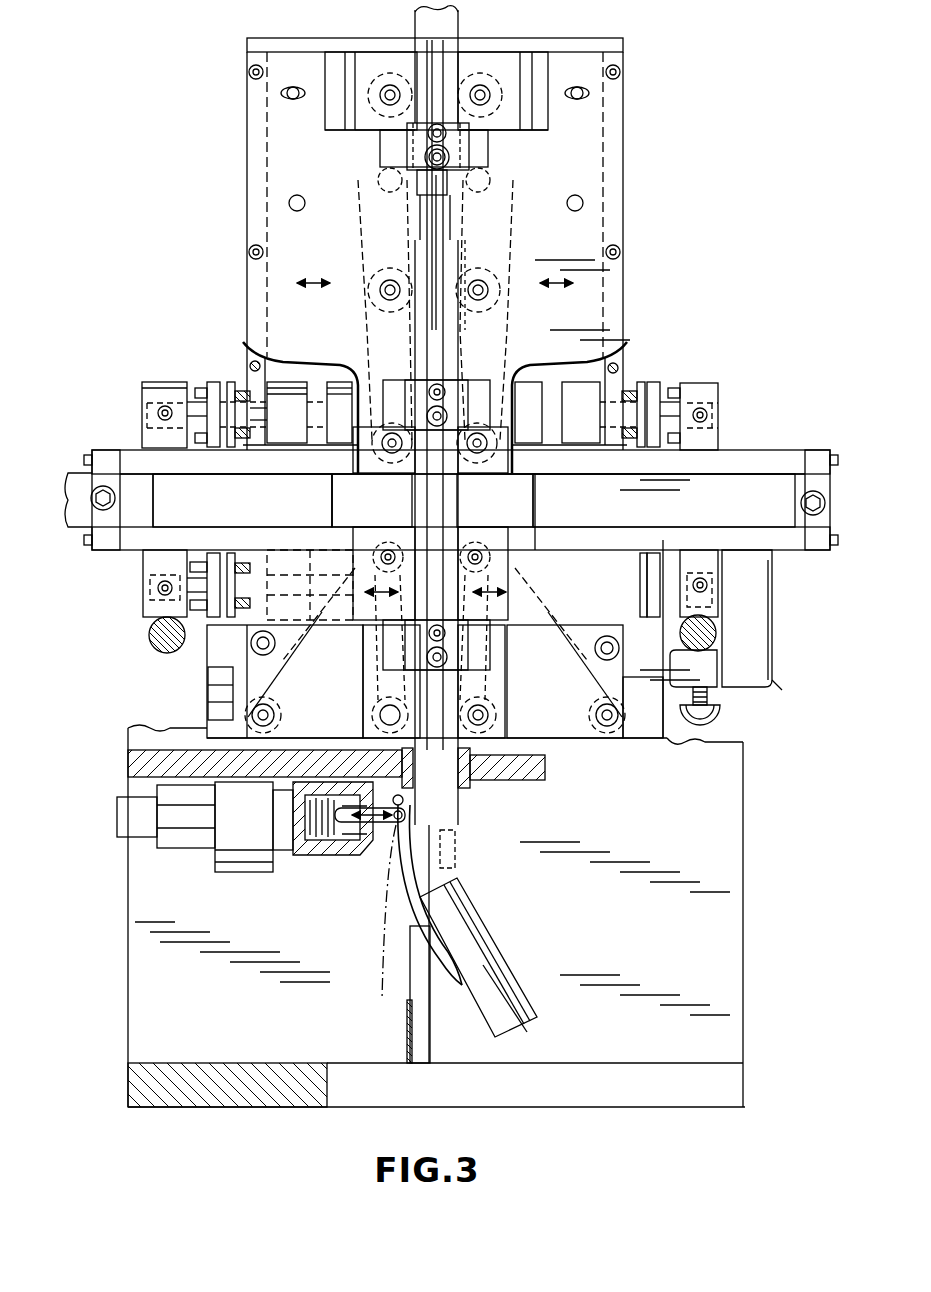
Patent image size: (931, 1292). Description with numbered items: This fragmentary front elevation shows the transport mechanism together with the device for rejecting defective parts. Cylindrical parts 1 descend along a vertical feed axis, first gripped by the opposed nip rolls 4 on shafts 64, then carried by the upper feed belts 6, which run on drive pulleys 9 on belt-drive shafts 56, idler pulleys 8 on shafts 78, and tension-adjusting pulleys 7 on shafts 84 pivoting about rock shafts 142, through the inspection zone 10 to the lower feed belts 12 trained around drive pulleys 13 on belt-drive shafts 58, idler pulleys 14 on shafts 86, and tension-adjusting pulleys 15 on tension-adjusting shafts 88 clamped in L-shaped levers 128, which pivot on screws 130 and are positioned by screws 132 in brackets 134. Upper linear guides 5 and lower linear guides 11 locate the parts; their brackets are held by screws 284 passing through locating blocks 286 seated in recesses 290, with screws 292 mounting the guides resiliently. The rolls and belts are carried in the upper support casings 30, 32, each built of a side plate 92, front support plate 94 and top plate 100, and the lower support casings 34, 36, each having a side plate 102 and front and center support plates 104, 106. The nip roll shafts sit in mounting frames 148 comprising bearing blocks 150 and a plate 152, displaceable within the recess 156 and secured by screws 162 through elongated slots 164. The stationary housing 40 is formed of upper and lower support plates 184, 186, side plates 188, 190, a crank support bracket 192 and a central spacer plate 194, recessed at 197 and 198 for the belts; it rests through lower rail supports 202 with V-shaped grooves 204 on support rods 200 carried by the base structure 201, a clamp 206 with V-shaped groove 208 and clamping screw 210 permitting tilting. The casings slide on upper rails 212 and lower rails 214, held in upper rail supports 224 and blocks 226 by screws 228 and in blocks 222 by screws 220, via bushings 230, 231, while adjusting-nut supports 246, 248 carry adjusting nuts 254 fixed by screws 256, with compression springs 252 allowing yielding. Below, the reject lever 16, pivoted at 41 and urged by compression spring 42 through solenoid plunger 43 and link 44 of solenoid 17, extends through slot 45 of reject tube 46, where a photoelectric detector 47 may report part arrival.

The cylindrical parts 1 is at (450, 16).
The nip rolls 4 is at (378, 74).
The upper linear guides 5 is at (445, 256).
The upper feed belts 6 is at (512, 230).
The tension-adjusting pulleys 7 is at (512, 200).
The idler pulleys 8 is at (490, 300).
The drive pulleys 9 is at (496, 428).
The inspection zone 10 is at (556, 478).
The lower linear guides 11 is at (425, 590).
The lower feed belts 12 is at (290, 650).
The drive pulleys 13 is at (470, 568).
The idler pulleys 14 is at (481, 681).
The tension-adjusting pulleys 15 is at (590, 718).
The reject lever 16 is at (430, 953).
The solenoid 17 is at (248, 873).
The upper support casing 30 is at (244, 276).
The upper support casing 32 is at (626, 306).
The lower support casing 34 is at (336, 720).
The lower support casing 36 is at (558, 752).
The housing 40 is at (748, 452).
The pivot 41 is at (370, 802).
The compression spring 42 is at (350, 855).
The solenoid plunger 43 is at (316, 855).
The link 44 is at (392, 826).
The slot 45 is at (410, 1010).
The reject tube 46 is at (407, 1042).
The photoelectric detector 47 is at (456, 860).
The belt-drive shafts 56 is at (500, 475).
The belt-drive shafts 58 is at (386, 548).
The shafts 64 is at (490, 98).
The shafts 78 is at (385, 284).
The shafts 84 is at (515, 218).
The shafts 86 is at (490, 710).
The tension-adjusting shafts 88 is at (604, 740).
The side plate 92 is at (247, 345).
The front support plate 94 is at (296, 254).
The top plate 100 is at (546, 40).
The side plate 102 is at (272, 548).
The front support plate 104 is at (362, 672).
The center support plate 106 is at (517, 677).
The L-shaped levers 128 is at (596, 700).
The screws 130 is at (595, 645).
The screws 132 is at (660, 665).
The brackets 134 is at (668, 740).
The rock shafts 142 is at (584, 203).
The mounting frames 148 is at (378, 45).
The bearing blocks 150 is at (380, 130).
The plate 152 is at (345, 132).
The recess 156 is at (325, 72).
The screws 162 is at (305, 95).
The elongated slots 164 is at (291, 99).
The upper support plate 184 is at (796, 450).
The lower support plate 186 is at (795, 552).
The side plate 188 is at (128, 450).
The side plate 190 is at (832, 475).
The crank support bracket 192 is at (95, 452).
The central spacer plate 194 is at (330, 490).
The recess 197 is at (502, 500).
The recess 198 is at (528, 550).
The support rods 200 is at (150, 640).
The base structure 201 is at (128, 1030).
The lower rail supports 202 is at (143, 598).
The V-shaped grooves 204 is at (712, 623).
The clamp 206 is at (774, 688).
The V-shaped groove 208 is at (705, 655).
The clamping screw 210 is at (720, 712).
The upper rails 212 is at (236, 412).
The lower rails 214 is at (196, 560).
The screws 220 is at (158, 587).
The blocks 222 is at (336, 612).
The upper rail supports 224 is at (143, 382).
The blocks 226 is at (336, 380).
The screws 228 is at (158, 410).
The bushings 230 is at (292, 380).
The bushings 231 is at (312, 560).
The upper adjusting-nut supports 246 is at (672, 385).
The lower adjusting-nut supports 248 is at (660, 553).
The compression springs 252 is at (215, 380).
The adjusting nut 254 is at (204, 378).
The screws 256 is at (198, 388).
The screw 284 is at (428, 133).
The locating block 286 is at (470, 145).
The recesses 290 is at (478, 155).
The screw 292 is at (430, 160).